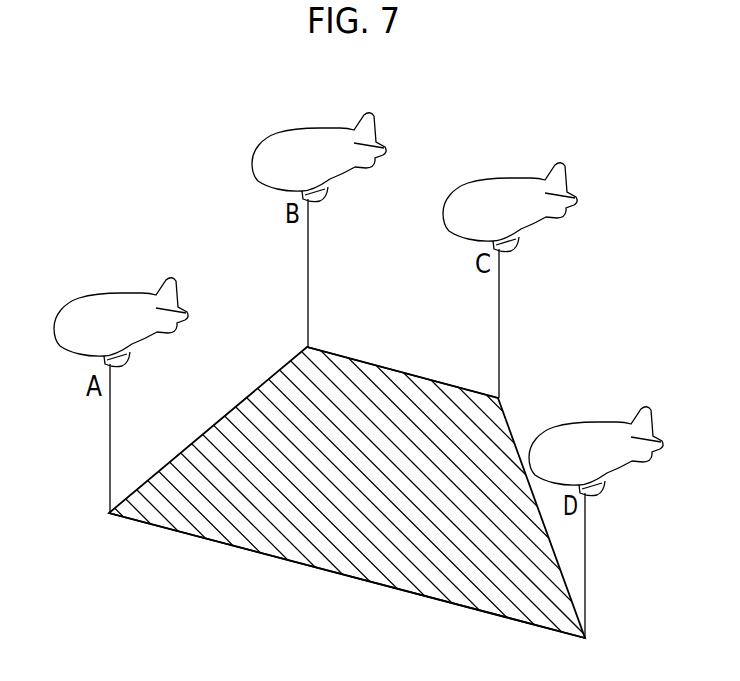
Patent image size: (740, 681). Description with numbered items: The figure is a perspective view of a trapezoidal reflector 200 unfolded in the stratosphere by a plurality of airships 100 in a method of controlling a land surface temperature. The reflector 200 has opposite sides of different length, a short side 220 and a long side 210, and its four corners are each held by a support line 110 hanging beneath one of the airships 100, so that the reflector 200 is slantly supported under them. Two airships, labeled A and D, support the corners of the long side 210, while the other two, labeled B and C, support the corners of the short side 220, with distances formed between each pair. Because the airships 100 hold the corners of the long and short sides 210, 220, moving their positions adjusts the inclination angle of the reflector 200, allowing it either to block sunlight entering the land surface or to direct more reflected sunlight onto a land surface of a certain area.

The airship 100 is at (277, 158).
The support line 110 is at (307, 272).
The trapezoidal reflector 200 is at (483, 445).
The short side 220 is at (405, 372).
The long side 210 is at (243, 549).